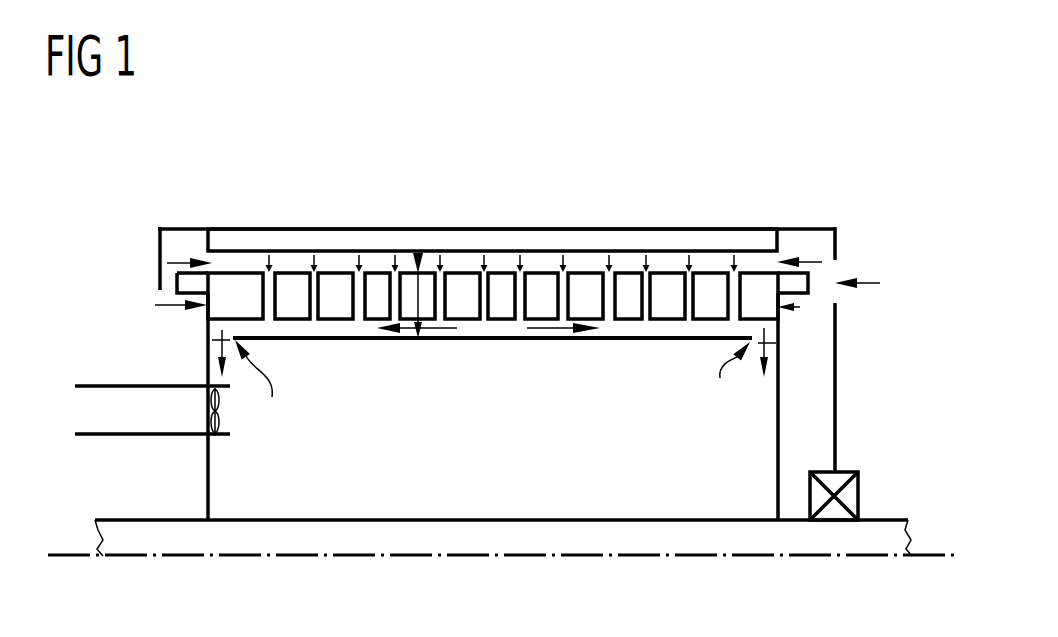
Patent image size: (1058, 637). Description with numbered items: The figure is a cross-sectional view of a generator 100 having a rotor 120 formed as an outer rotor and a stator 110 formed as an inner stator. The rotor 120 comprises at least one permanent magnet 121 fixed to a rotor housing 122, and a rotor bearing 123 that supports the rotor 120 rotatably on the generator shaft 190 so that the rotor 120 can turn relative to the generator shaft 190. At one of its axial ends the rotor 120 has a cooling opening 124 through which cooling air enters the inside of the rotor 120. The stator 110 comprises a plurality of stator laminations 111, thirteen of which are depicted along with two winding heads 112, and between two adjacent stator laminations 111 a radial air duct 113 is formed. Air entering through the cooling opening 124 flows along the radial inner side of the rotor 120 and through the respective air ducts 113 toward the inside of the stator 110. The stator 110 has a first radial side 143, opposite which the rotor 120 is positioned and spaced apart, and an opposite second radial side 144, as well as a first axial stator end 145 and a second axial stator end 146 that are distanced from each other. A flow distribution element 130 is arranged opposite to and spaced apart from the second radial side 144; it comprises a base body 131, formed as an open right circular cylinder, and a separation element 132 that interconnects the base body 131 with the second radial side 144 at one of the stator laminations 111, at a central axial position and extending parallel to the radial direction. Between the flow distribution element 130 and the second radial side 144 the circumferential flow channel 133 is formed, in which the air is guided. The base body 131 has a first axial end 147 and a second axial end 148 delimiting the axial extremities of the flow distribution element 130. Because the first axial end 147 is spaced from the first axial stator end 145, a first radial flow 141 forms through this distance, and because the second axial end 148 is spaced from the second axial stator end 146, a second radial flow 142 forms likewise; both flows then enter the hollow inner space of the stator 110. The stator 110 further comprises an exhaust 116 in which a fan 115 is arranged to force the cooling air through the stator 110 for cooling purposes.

The generator 100 is at (738, 111).
The stator 110 is at (148, 337).
The stator laminations 111 is at (759, 281).
The winding heads 112 is at (872, 145).
The radial air duct 113 is at (606, 282).
The fan 115 is at (210, 397).
The exhaust 116 is at (137, 437).
The rotor 120 is at (501, 197).
The permanent magnet 121 is at (295, 240).
The rotor housing 122 is at (837, 422).
The rotor bearing 123 is at (860, 497).
The cooling opening 124 is at (835, 275).
The flow distribution element 130 is at (379, 360).
The base body 131 is at (607, 341).
The separation element 132 is at (500, 322).
The circumferential flow channel 133 is at (680, 328).
The first radial flow 141 is at (213, 340).
The second radial flow 142 is at (776, 343).
The first radial side 143 is at (418, 253).
The second radial side 144 is at (418, 340).
The first axial stator end 145 is at (157, 305).
The second axial stator end 146 is at (800, 307).
The first axial end 147 is at (264, 388).
The second axial end 148 is at (720, 390).
The generator shaft 190 is at (525, 557).